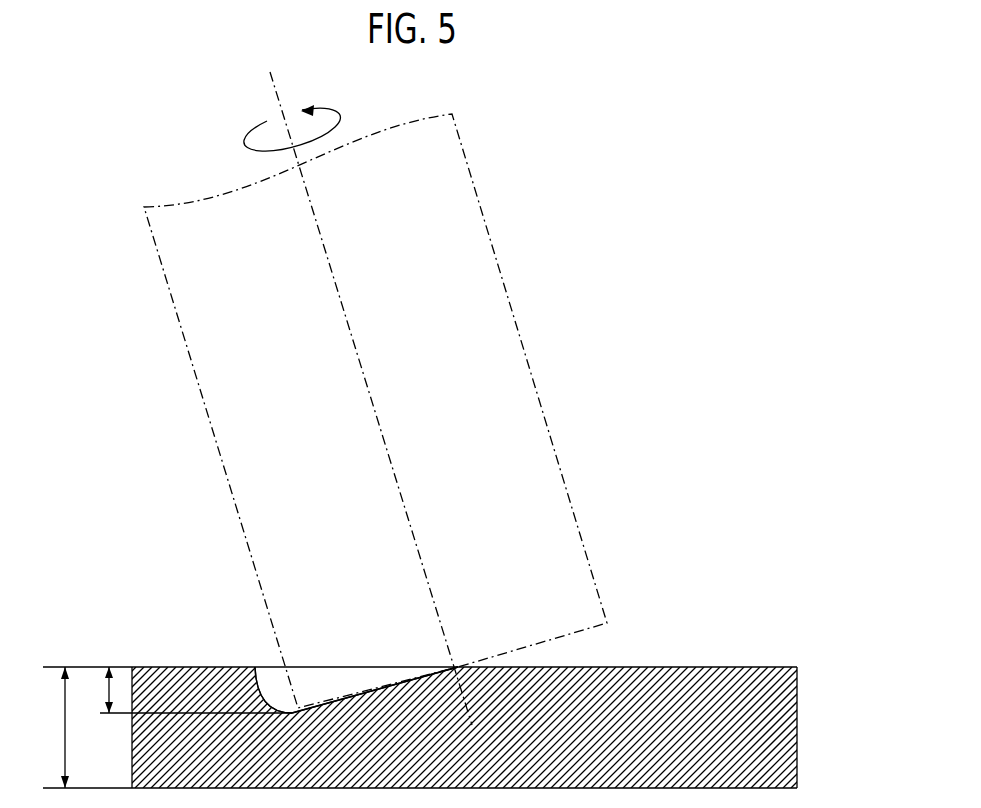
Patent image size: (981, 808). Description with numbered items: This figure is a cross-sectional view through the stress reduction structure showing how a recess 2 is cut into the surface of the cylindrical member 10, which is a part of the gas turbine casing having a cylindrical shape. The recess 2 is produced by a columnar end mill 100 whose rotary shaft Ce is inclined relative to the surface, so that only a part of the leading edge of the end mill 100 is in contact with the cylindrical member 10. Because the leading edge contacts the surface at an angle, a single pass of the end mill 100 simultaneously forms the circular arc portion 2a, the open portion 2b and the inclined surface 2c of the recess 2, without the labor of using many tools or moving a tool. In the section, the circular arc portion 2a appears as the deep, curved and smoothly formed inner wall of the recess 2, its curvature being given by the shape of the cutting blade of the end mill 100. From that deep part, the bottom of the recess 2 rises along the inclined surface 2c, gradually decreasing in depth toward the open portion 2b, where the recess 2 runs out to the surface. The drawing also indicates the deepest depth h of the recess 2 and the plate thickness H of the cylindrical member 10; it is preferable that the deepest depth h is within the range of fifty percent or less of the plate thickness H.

The end mill 100 is at (501, 268).
The rotary shaft Ce is at (272, 78).
The cylindrical member 10 is at (680, 695).
The recess 2 is at (348, 687).
The circular arc portion 2a is at (255, 667).
The open portion 2b is at (487, 663).
The inclined surface 2c is at (398, 682).
The plate thickness H is at (57, 727).
The deepest depth h is at (189, 690).